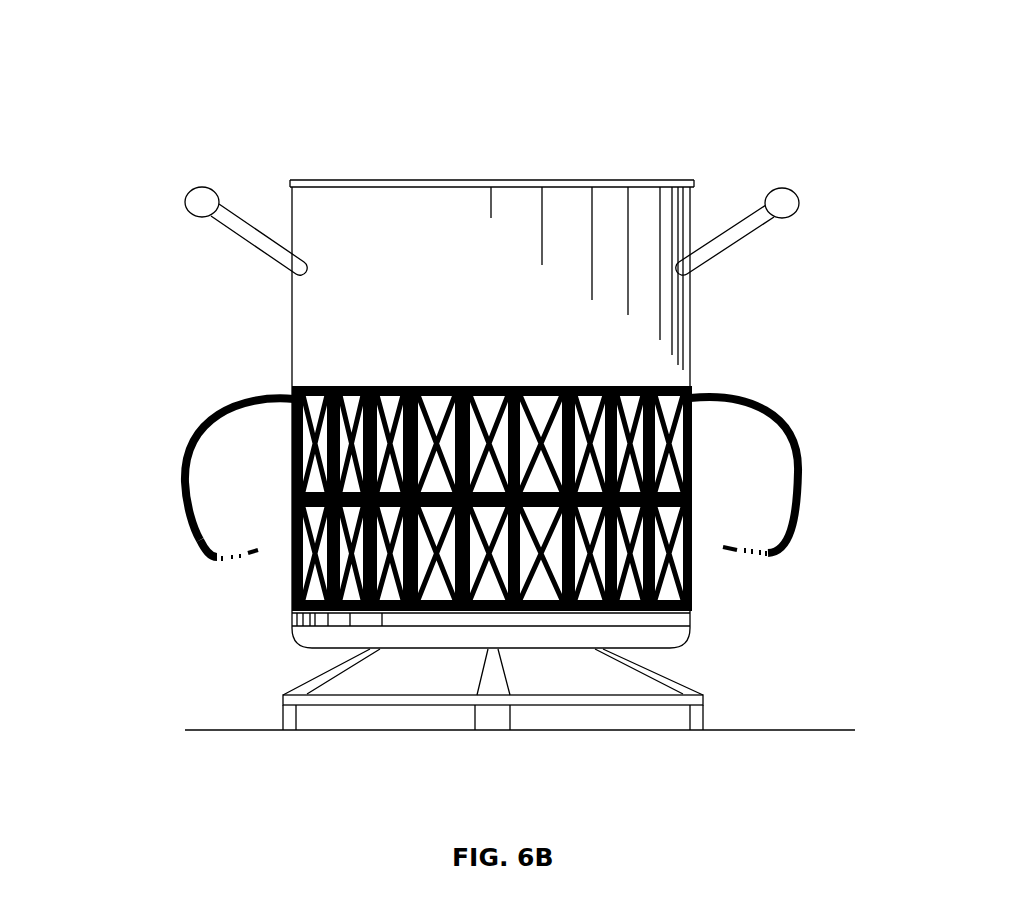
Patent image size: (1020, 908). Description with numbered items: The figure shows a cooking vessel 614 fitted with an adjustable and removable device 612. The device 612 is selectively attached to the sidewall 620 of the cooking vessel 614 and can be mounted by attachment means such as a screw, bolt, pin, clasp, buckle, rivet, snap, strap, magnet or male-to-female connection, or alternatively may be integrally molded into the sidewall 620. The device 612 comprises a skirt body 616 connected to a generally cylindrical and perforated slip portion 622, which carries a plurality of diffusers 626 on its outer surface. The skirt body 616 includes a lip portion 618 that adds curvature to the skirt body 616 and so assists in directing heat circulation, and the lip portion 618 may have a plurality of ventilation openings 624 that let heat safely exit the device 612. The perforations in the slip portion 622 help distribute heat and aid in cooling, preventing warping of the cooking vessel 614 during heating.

The adjustable and removable device 612 is at (218, 375).
The cooking vessel 614 is at (270, 183).
The skirt body 616 is at (170, 460).
The lip portion 618 is at (183, 517).
The sidewall 620 is at (533, 343).
The slip portion 622 is at (597, 530).
The ventilation openings 624 is at (227, 567).
The diffusers 626 is at (453, 433).